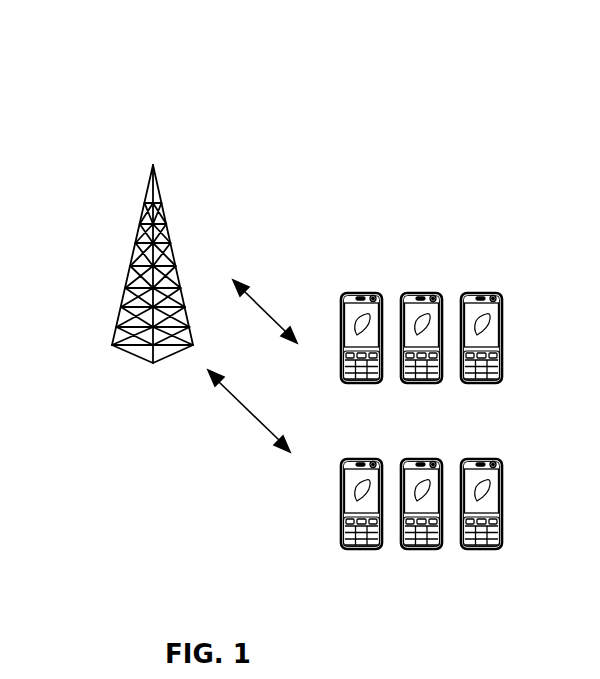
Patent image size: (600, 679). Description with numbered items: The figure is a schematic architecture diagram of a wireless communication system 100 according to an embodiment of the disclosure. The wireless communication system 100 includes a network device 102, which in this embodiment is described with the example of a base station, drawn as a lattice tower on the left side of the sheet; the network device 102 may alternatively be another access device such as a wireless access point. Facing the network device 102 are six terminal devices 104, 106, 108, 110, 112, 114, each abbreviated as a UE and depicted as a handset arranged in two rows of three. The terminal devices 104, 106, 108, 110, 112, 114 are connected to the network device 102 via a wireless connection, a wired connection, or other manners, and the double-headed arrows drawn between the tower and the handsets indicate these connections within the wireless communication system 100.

The wireless communication system 100 is at (115, 82).
The network device 102 is at (133, 356).
The terminal device 104 is at (362, 292).
The terminal device 106 is at (420, 292).
The terminal device 108 is at (480, 292).
The terminal device 110 is at (358, 550).
The terminal device 112 is at (420, 550).
The terminal device 114 is at (480, 550).